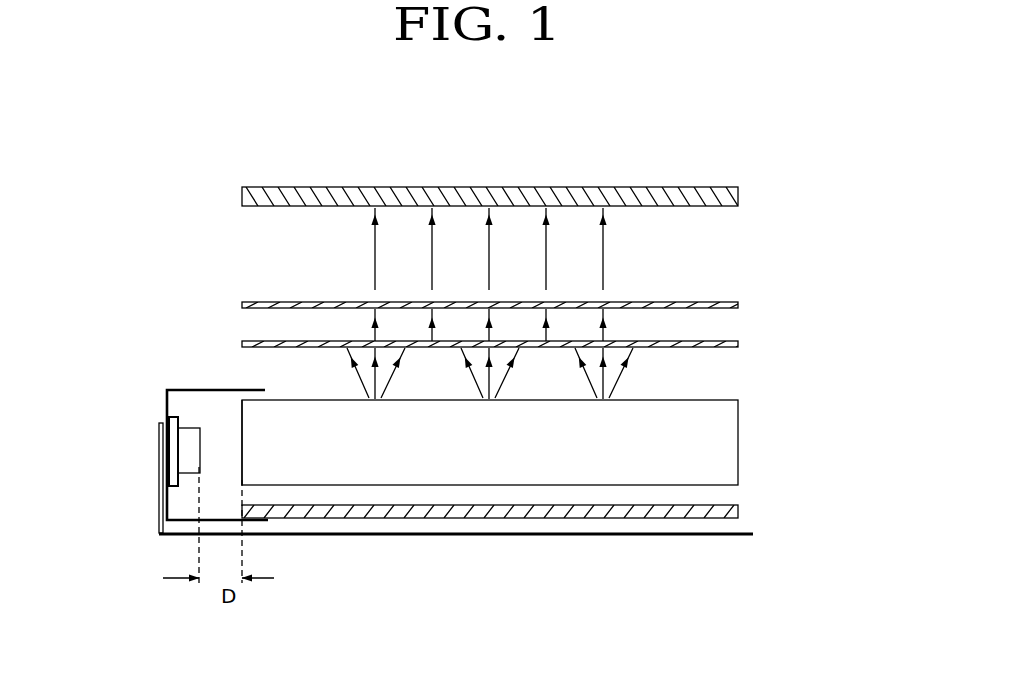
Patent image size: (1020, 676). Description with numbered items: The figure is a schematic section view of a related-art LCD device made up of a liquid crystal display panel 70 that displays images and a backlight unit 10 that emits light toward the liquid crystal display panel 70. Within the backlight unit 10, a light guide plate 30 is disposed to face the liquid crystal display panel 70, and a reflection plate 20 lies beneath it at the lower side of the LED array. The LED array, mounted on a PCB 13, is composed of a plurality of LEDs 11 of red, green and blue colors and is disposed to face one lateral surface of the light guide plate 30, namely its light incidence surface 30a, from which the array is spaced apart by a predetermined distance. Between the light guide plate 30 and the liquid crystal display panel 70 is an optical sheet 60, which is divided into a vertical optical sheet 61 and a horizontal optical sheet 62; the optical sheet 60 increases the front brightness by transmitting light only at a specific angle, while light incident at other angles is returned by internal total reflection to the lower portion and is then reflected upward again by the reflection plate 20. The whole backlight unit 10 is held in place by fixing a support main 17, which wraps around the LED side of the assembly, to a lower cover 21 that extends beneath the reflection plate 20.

The backlight unit 10 is at (160, 427).
The LED 11 is at (151, 450).
The PCB 13 is at (166, 417).
The support main 17 is at (193, 390).
The reflection plate 20 is at (738, 512).
The lower cover 21 is at (629, 536).
The light guide plate 30 is at (730, 445).
The light incidence surface 30a is at (240, 428).
The optical sheet 60 is at (552, 323).
The vertical optical sheet 61 is at (526, 353).
The horizontal optical sheet 62 is at (738, 305).
The liquid crystal display panel 70 is at (738, 197).